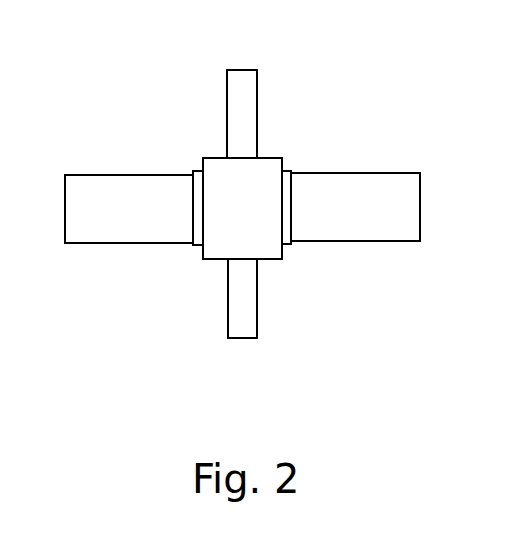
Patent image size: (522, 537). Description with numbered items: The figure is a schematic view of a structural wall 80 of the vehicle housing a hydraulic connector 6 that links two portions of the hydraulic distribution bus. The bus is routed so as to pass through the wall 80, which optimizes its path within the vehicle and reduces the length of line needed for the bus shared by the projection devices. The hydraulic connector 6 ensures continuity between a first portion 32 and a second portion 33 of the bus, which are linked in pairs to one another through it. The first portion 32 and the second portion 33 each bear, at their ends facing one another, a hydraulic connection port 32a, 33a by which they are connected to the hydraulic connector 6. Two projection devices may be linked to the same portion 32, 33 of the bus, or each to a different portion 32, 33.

The hydraulic connector 6 is at (204, 148).
The wall 80 is at (238, 338).
The first portion 32 is at (112, 257).
The hydraulic connection port 32a is at (198, 247).
The hydraulic connection port 33a is at (287, 247).
The second portion 33 is at (378, 253).